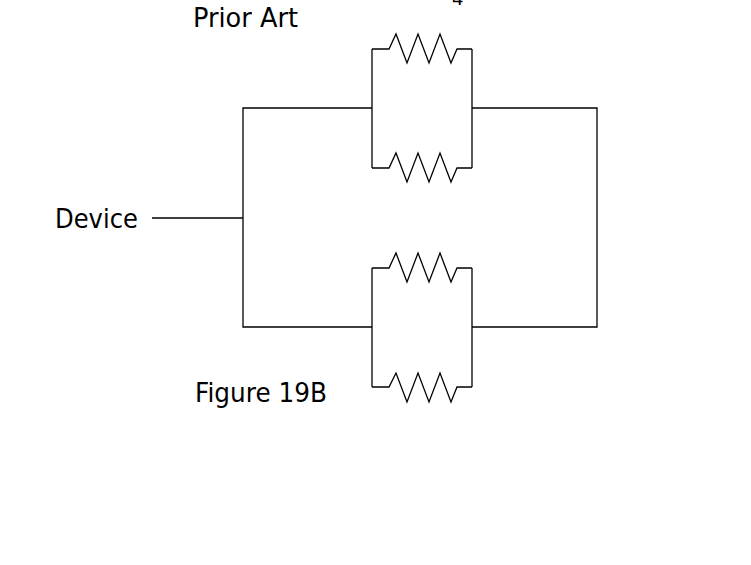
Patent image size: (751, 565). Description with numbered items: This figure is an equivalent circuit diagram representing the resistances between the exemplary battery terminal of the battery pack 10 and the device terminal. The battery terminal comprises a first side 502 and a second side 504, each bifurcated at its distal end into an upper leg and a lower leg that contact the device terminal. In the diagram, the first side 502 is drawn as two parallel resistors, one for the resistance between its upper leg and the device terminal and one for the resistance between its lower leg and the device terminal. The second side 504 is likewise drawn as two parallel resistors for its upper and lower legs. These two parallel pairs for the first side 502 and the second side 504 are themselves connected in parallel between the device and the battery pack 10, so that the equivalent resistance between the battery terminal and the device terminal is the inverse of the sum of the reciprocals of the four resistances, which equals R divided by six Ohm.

The battery pack 10 is at (597, 218).
The first side 502 is at (468, 112).
The second side 504 is at (468, 336).